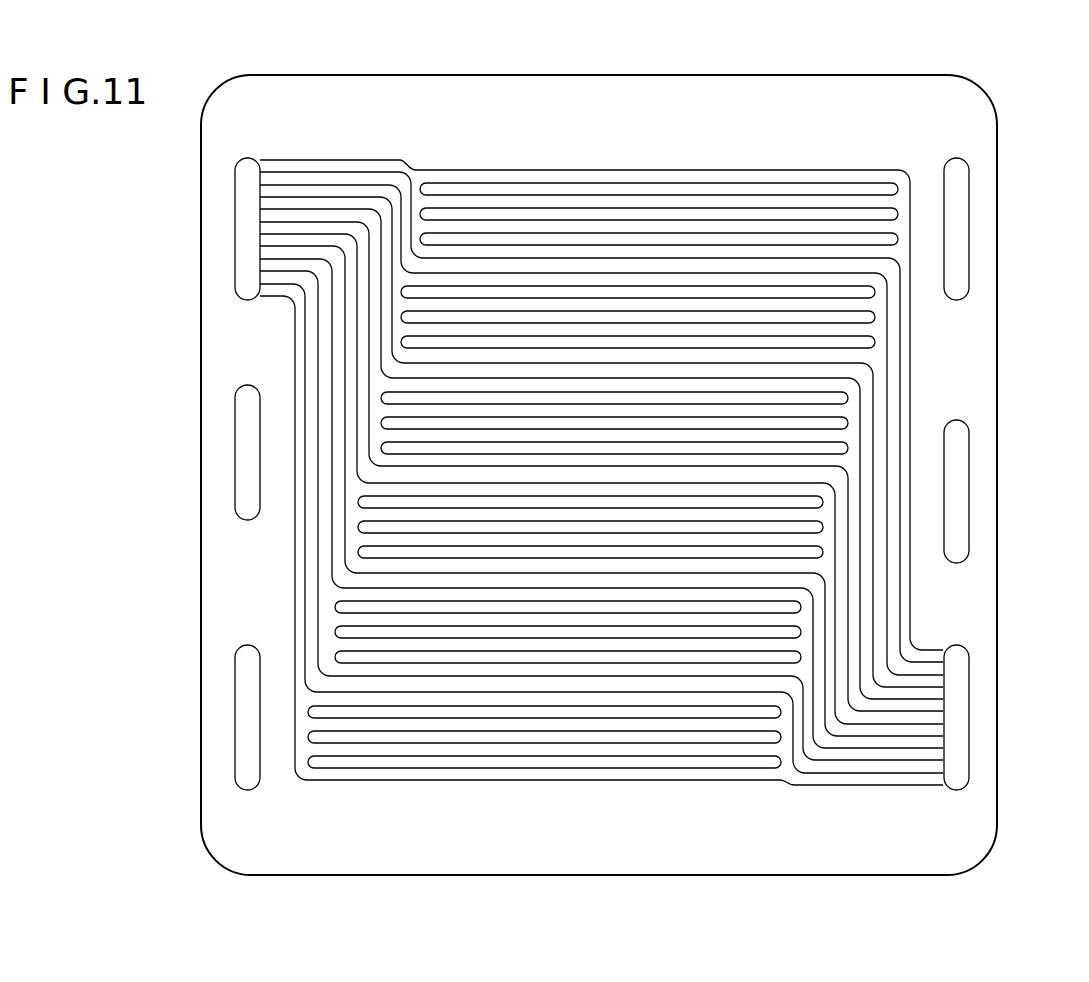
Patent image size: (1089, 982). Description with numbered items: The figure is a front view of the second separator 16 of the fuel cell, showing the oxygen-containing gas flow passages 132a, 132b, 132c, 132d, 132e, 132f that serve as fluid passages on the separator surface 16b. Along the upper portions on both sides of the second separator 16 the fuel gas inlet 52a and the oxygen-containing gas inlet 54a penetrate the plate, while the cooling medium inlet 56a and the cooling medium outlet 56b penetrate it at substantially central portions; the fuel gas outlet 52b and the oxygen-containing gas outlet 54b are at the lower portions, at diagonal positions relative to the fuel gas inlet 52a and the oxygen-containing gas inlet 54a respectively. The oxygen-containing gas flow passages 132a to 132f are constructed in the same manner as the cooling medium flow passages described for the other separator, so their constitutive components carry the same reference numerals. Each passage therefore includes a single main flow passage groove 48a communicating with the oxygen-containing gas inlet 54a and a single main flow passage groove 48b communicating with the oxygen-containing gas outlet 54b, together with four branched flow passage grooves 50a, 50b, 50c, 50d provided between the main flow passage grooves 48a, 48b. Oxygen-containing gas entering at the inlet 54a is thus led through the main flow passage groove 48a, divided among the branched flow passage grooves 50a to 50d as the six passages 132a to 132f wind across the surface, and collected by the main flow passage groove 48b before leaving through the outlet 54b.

The second separator 16 is at (599, 449).
The surface of the second separator 16b is at (612, 85).
The main flow passage groove 48a is at (297, 190).
The main flow passage groove 48b is at (927, 676).
The branched flow passage groove 50a is at (467, 178).
The branched flow passage groove 50b is at (537, 195).
The branched flow passage groove 50c is at (636, 222).
The branched flow passage groove 50d is at (792, 240).
The fuel gas inlet 52a is at (956, 231).
The fuel gas outlet 52b is at (248, 716).
The oxygen-containing gas inlet 54a is at (248, 218).
The oxygen-containing gas outlet 54b is at (958, 719).
The cooling medium inlet 56a is at (248, 455).
The cooling medium outlet 56b is at (956, 482).
The oxygen-containing gas flow passage 132a is at (657, 172).
The oxygen-containing gas flow passage 132b is at (569, 271).
The oxygen-containing gas flow passage 132c is at (679, 375).
The oxygen-containing gas flow passage 132d is at (399, 569).
The oxygen-containing gas flow passage 132e is at (459, 679).
The oxygen-containing gas flow passage 132f is at (577, 779).